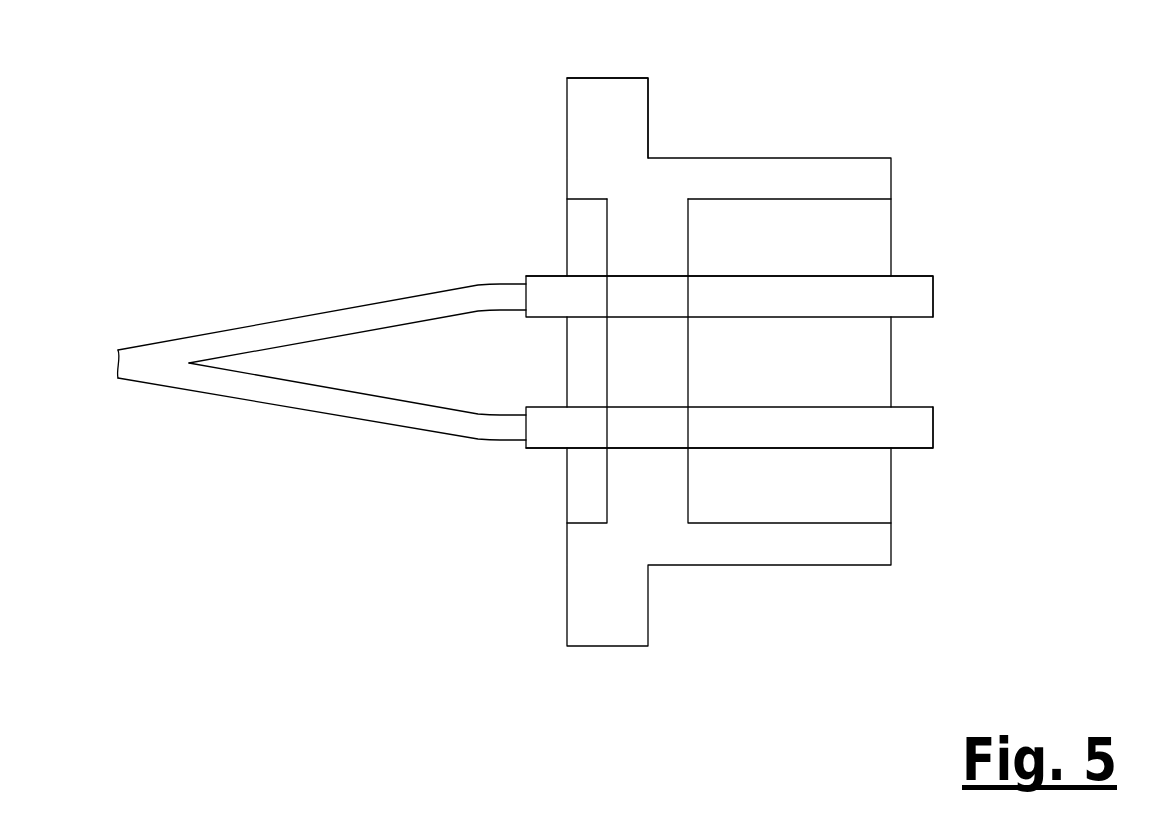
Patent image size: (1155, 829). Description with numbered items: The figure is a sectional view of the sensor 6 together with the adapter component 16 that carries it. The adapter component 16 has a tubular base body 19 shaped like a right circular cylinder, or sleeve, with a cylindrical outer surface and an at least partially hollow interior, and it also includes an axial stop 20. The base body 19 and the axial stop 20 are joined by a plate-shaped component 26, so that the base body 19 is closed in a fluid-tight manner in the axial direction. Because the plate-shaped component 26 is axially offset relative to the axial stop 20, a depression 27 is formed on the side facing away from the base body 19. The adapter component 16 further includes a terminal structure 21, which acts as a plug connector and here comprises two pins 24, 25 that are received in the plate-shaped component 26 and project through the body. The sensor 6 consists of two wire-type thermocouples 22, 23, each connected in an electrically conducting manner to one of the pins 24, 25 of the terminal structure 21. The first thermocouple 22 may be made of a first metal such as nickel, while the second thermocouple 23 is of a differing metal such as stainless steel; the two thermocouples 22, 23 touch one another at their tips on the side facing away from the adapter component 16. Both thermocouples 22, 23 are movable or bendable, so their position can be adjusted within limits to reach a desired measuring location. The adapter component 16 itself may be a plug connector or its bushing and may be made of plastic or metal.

The sensor 6 is at (322, 359).
The adapter component 16 is at (697, 152).
The tubular base body 19 is at (787, 180).
The axial stop 20 is at (605, 108).
The terminal structure 21 is at (905, 430).
The first thermocouple 22 is at (353, 333).
The second thermocouple 23 is at (382, 408).
The pin 24 is at (887, 437).
The pin 25 is at (857, 290).
The plate-shaped component 26 is at (642, 495).
The depression 27 is at (583, 239).